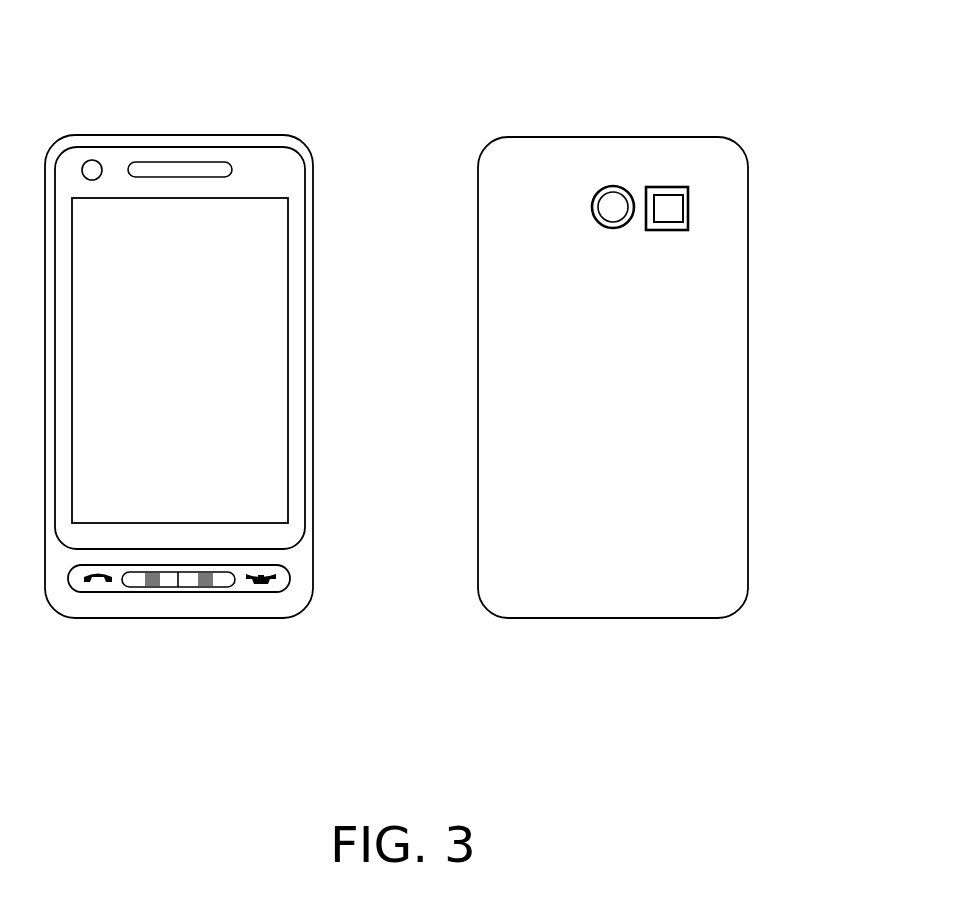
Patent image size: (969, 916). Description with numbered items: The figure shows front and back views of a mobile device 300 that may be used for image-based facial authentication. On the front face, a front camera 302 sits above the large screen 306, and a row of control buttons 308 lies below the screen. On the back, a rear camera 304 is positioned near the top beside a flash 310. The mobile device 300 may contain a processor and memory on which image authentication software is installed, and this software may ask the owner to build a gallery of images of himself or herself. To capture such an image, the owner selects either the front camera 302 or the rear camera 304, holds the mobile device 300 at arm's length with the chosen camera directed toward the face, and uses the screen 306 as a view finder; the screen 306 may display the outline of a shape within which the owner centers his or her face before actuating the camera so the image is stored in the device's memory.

The mobile device 300 is at (338, 84).
The front camera 302 is at (97, 160).
The rear camera 304 is at (616, 198).
The screen 306 is at (180, 360).
The control buttons 308 is at (193, 592).
The flash 310 is at (688, 207).